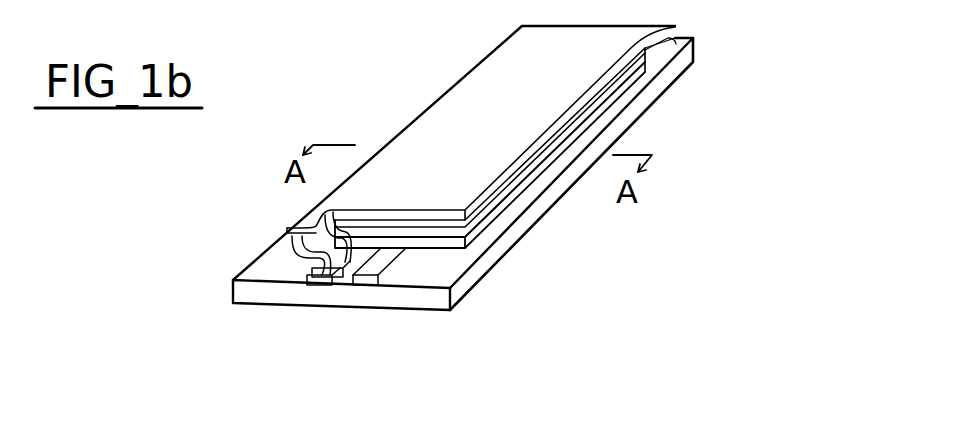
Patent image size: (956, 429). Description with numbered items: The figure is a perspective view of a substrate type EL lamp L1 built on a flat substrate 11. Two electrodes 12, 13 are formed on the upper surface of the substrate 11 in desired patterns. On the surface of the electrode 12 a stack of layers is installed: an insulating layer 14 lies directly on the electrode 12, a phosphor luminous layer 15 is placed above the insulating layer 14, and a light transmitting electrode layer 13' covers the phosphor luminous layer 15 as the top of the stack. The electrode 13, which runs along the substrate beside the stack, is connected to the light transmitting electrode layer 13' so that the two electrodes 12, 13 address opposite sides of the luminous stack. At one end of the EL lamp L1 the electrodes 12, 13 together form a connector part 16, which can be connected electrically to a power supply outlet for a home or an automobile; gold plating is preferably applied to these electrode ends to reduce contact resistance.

The substrate 11 is at (413, 298).
The electrode 12 is at (457, 243).
The electrode 13 is at (245, 256).
The light transmitting electrode layer 13' is at (481, 144).
The insulating layer 14 is at (465, 233).
The phosphor luminous layer 15 is at (465, 224).
The connector part 16 is at (372, 312).
The substrate type EL lamp L1 is at (663, 98).